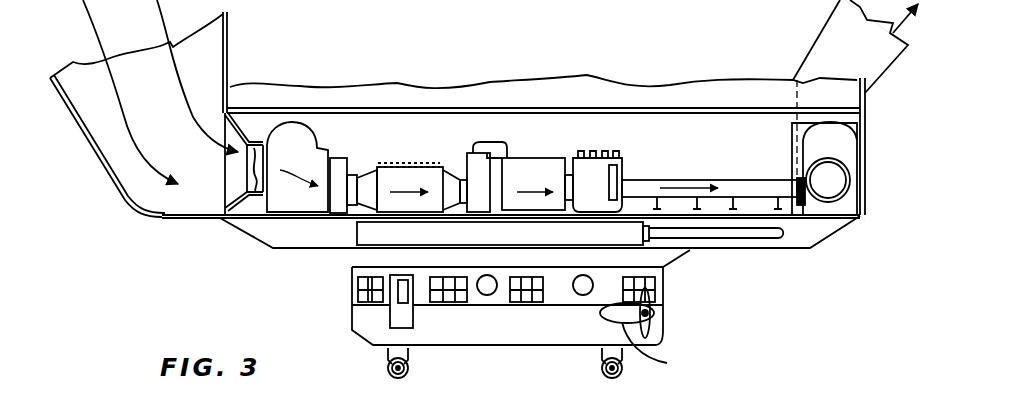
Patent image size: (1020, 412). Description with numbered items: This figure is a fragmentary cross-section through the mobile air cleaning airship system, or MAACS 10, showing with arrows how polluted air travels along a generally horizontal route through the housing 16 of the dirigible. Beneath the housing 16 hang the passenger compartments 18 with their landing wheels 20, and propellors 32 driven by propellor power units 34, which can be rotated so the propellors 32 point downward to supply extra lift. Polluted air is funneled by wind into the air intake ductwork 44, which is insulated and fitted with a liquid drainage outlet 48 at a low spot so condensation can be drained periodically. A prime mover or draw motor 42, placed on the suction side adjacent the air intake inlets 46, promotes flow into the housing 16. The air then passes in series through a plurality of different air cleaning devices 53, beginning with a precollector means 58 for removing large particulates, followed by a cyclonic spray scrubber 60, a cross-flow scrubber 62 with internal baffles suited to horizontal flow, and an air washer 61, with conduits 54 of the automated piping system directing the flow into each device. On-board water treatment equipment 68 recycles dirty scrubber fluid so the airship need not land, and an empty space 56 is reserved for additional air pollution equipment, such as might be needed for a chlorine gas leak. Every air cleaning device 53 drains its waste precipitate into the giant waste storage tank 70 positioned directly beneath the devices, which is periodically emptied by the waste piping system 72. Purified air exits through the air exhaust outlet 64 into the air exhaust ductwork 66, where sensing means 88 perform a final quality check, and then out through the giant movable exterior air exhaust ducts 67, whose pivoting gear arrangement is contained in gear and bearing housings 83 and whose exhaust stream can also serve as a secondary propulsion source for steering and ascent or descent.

The MAACS 10 is at (208, 251).
The housing 16 is at (826, 248).
The passenger compartments 18 is at (498, 315).
The landing wheels 20 is at (385, 376).
The propellors 32 is at (652, 318).
The propellor power units 34 is at (660, 363).
The prime mover 42 is at (283, 140).
The air intake ductwork 44 is at (232, 30).
The air intake inlets 46 is at (237, 175).
The liquid drainage outlet 48 is at (172, 222).
The air cleaning devices 53 is at (537, 154).
The conduits 54 is at (572, 158).
The empty space 56 is at (693, 176).
The precollector means 58 is at (343, 154).
The cyclonic spray scrubber 60 is at (464, 160).
The air washer 61 is at (533, 184).
The cross-flow scrubber 62 is at (398, 160).
The air exhaust outlet 64 is at (830, 177).
The air exhaust ductwork 66 is at (861, 217).
The air exhaust ducts 67 is at (831, 34).
The water treatment equipment 68 is at (627, 157).
The waste storage tank 70 is at (388, 237).
The waste piping system 72 is at (727, 233).
The gear and bearing housings 83 is at (852, 120).
The sensing means 88 is at (794, 176).